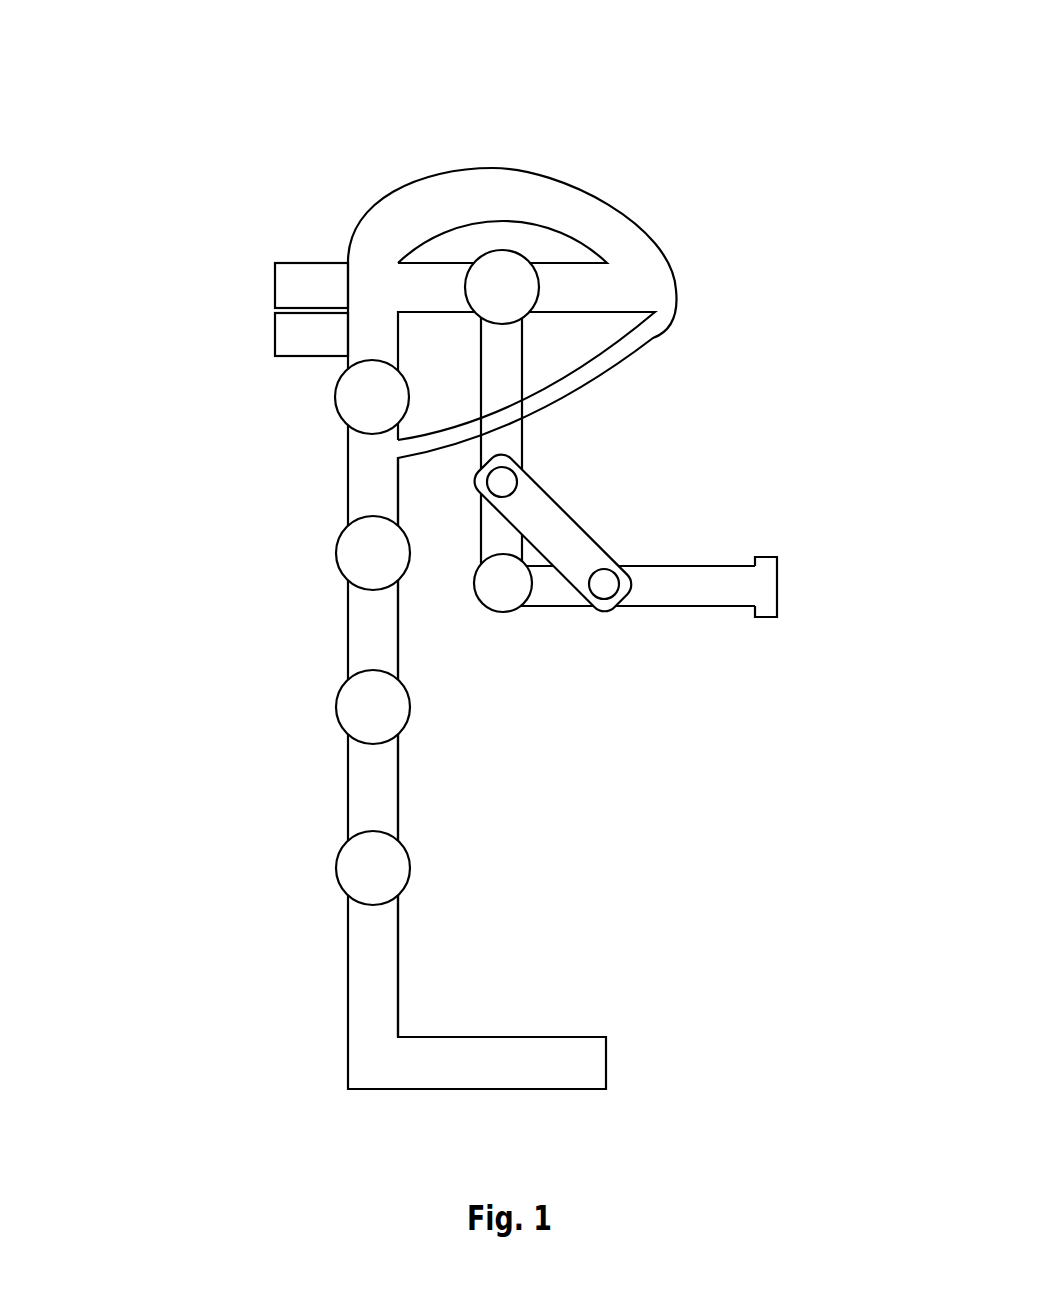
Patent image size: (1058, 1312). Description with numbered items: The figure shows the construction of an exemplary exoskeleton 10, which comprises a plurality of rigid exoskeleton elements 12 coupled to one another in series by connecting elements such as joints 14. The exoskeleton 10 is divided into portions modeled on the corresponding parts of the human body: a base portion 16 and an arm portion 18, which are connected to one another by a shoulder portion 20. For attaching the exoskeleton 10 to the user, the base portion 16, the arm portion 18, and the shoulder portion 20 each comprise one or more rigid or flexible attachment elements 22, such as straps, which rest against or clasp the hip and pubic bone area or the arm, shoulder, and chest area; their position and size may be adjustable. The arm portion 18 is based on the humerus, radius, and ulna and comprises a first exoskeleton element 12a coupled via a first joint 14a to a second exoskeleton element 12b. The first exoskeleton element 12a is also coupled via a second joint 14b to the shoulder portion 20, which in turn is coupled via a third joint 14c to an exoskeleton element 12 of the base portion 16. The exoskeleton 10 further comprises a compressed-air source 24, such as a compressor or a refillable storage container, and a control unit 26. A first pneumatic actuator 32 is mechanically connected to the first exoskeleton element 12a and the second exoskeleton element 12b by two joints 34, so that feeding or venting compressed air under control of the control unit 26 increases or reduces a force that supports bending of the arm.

The exoskeleton 10 is at (474, 550).
The exoskeleton element 12 is at (285, 543).
The first exoskeleton element 12a is at (556, 370).
The second exoskeleton element 12b is at (732, 526).
The joint 14 is at (320, 598).
The first joint 14a is at (539, 631).
The second joint 14b is at (529, 229).
The third joint 14c is at (319, 445).
The base portion 16 is at (234, 698).
The arm portion 18 is at (792, 727).
The shoulder portion 20 is at (364, 135).
The attachment element 22 is at (682, 352).
The compressed-air source 24 is at (242, 260).
The control unit 26 is at (242, 308).
The first pneumatic actuator 32 is at (604, 483).
The joint 34 is at (546, 439).